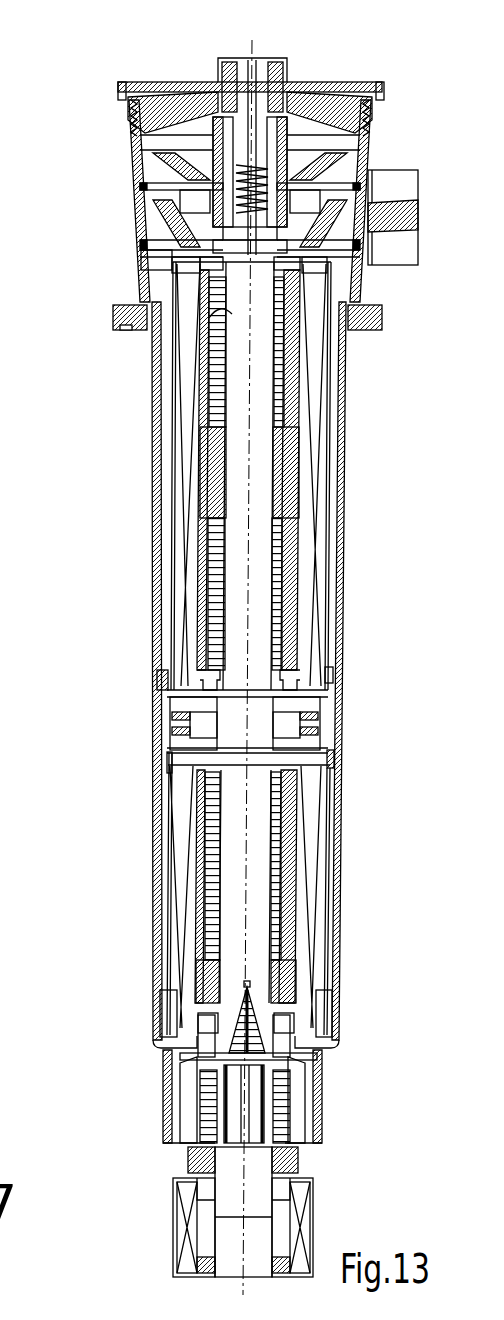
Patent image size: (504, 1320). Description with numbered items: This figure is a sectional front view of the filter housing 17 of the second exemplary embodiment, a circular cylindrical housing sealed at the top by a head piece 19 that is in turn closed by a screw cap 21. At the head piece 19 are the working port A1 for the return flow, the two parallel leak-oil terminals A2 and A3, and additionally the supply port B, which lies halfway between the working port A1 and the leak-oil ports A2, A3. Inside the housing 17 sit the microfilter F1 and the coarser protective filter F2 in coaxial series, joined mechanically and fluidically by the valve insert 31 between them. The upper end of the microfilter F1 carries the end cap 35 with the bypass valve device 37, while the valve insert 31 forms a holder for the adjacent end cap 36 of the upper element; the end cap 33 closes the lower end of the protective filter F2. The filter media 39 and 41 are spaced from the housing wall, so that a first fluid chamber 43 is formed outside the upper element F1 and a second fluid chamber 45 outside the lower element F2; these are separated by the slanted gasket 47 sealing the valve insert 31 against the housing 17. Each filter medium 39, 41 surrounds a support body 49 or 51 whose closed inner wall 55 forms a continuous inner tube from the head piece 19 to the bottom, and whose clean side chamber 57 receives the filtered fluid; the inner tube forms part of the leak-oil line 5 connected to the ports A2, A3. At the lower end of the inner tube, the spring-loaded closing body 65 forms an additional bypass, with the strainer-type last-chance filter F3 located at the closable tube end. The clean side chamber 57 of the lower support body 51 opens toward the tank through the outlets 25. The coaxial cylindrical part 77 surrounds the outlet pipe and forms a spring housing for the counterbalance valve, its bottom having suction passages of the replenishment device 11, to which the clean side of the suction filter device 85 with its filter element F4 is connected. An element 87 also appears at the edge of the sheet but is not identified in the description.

The replenishment device 11 is at (140, 1106).
The filter housing 17 is at (345, 513).
The head piece 19 is at (147, 216).
The screw cap 21 is at (293, 93).
The outlets 25 is at (300, 1080).
The valve insert 31 is at (140, 730).
The end cap 33 is at (333, 1018).
The end cap 35 is at (160, 262).
The end cap 36 is at (322, 682).
The bypass valve device 37 is at (167, 205).
The filter medium 39 is at (183, 466).
The filter medium 41 is at (308, 890).
The first fluid chamber 43 is at (330, 352).
The second fluid chamber 45 is at (323, 803).
The gasket 47 is at (336, 758).
The support body 49 is at (281, 483).
The support body 51 is at (282, 980).
The closed inner wall 55 is at (266, 568).
The clean side chamber 57 is at (210, 552).
The closing body 65 is at (217, 1075).
The cylindrical part 77 is at (292, 1130).
The suction filter device 85 is at (322, 1213).
The connector 87 is at (8, 144).
The leak-oil line 5 is at (207, 318).
The working port A1 is at (342, 277).
The leak-oil port A2 is at (352, 157).
The leak-oil port A3 is at (153, 156).
The supply port B is at (387, 193).
The filter element F1 is at (180, 437).
The protective filter F2 is at (167, 827).
The filter element F3 is at (236, 999).
The filter element F4 is at (177, 1210).